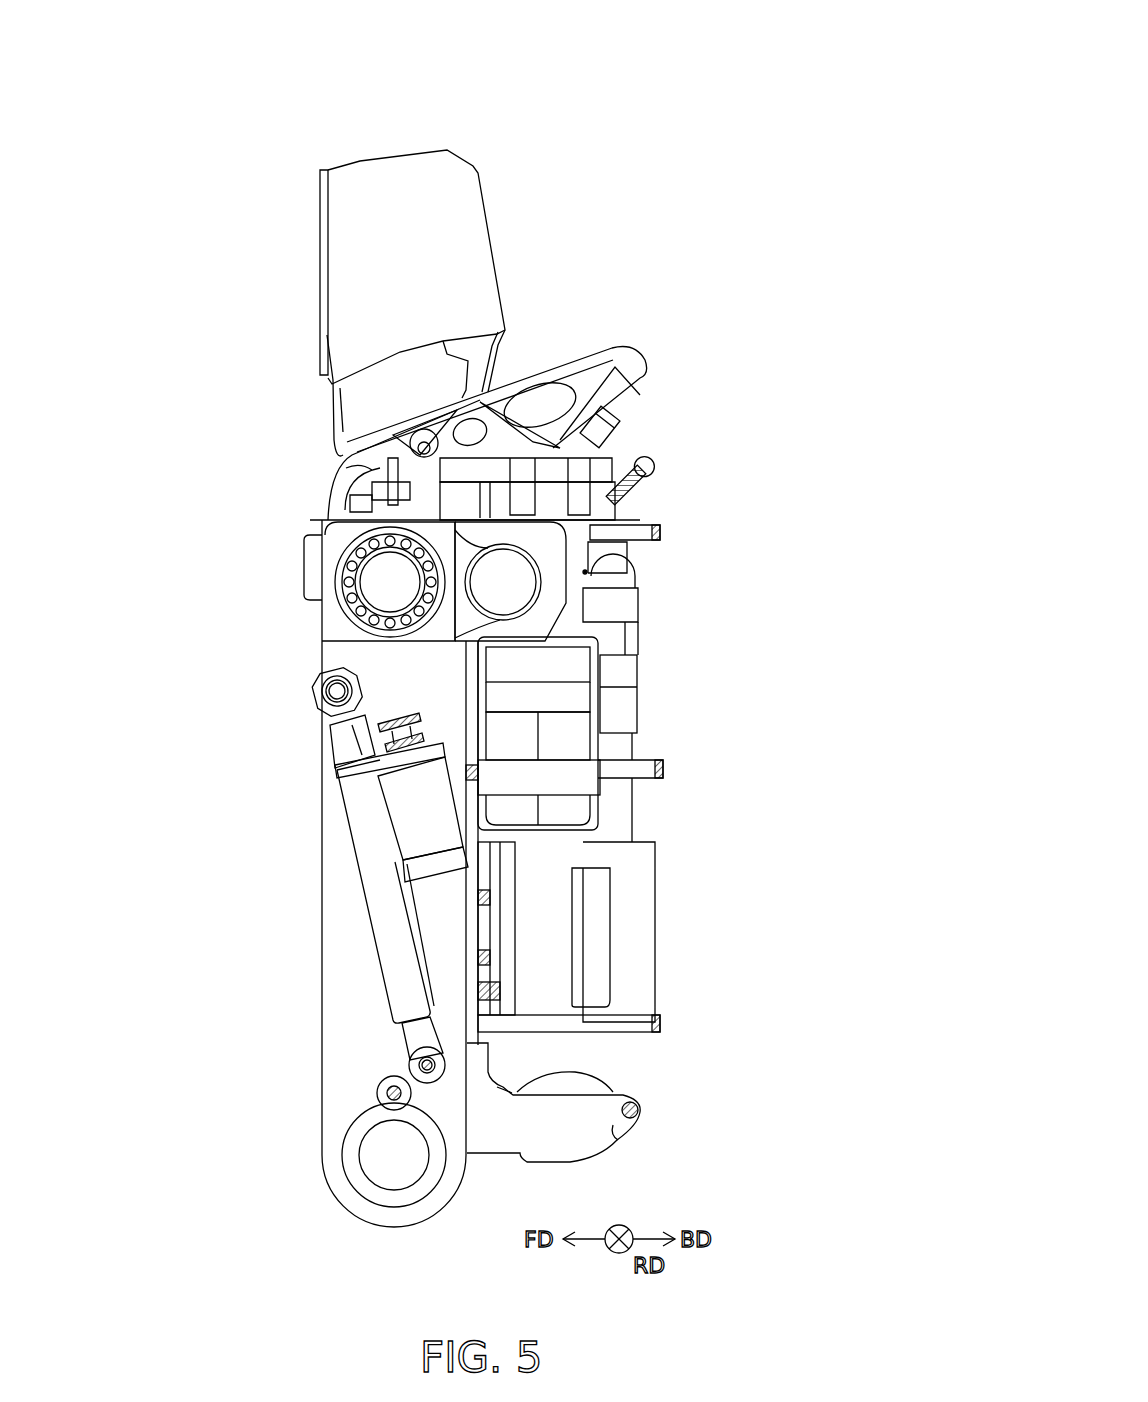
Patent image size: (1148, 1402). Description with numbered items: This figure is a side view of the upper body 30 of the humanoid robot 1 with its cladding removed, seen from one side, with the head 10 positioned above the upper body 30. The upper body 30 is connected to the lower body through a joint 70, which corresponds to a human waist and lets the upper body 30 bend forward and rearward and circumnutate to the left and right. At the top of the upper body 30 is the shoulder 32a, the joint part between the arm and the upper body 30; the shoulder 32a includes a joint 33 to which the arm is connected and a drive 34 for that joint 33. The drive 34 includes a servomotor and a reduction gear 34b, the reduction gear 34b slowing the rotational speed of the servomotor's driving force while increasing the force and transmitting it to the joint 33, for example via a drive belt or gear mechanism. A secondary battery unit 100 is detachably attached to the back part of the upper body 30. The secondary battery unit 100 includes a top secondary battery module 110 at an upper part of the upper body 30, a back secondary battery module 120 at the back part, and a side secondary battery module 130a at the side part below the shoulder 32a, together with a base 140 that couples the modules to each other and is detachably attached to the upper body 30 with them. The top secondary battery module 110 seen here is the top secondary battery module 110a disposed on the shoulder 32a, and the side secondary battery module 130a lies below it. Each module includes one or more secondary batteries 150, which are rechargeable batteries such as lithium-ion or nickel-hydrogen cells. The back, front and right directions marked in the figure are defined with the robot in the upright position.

The humanoid robot 1 is at (672, 85).
The head 10 is at (490, 247).
The upper body 30 is at (308, 458).
The shoulder 32a is at (346, 468).
The joint 33 is at (313, 540).
The drive 34 is at (453, 648).
The reduction gear 34b is at (455, 640).
The joint 70 is at (367, 1125).
The secondary battery unit 100 is at (652, 825).
The top secondary battery module 110 is at (622, 433).
The top secondary battery module 110a is at (623, 455).
The back secondary battery module 120 is at (646, 583).
The side secondary battery module 130a is at (605, 673).
The base 140 is at (585, 572).
The secondary battery 150 is at (640, 468).